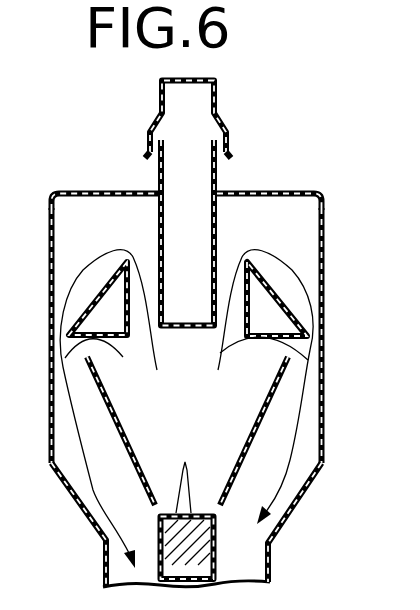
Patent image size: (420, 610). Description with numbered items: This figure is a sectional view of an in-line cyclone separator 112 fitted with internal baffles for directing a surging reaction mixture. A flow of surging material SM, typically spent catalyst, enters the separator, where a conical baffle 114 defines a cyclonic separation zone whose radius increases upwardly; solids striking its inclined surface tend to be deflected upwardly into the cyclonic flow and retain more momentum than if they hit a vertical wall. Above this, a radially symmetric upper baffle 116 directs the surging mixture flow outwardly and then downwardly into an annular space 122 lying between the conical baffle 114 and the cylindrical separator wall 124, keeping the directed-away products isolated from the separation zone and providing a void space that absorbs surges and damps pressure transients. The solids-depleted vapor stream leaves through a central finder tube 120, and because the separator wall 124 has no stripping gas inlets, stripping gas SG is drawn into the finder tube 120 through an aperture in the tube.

The in-line cyclone separator 112 is at (223, 354).
The conical baffle 114 is at (255, 418).
The upper baffle 116 is at (112, 308).
The finder tube 120 is at (139, 124).
The annular space 122 is at (83, 460).
The cylindrical separator wall 124 is at (323, 362).
The stripping gas SG is at (150, 155).
The surging material SM is at (186, 409).